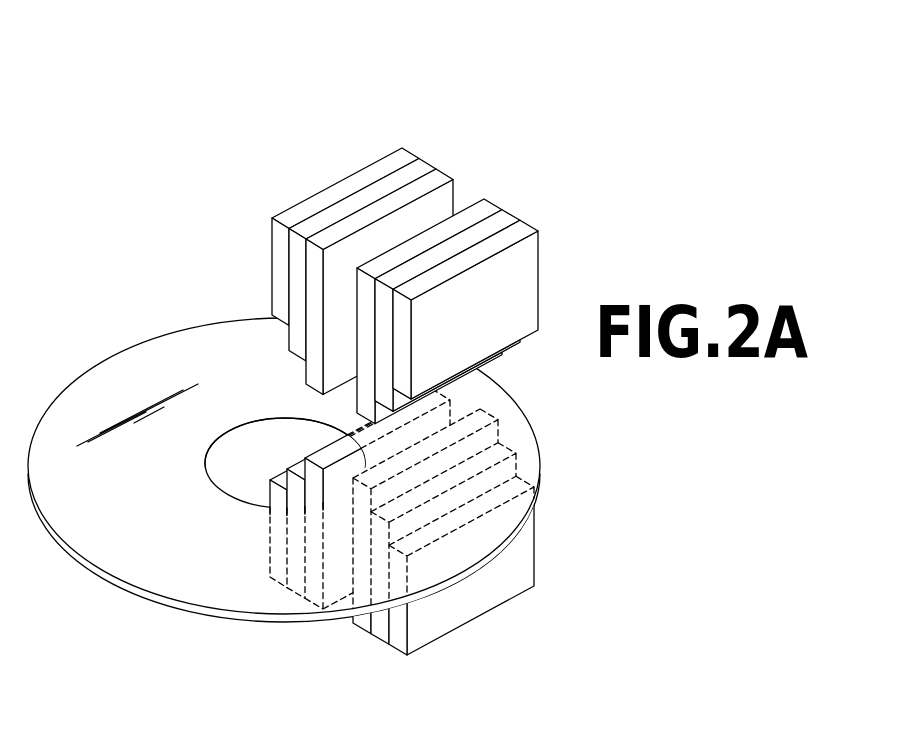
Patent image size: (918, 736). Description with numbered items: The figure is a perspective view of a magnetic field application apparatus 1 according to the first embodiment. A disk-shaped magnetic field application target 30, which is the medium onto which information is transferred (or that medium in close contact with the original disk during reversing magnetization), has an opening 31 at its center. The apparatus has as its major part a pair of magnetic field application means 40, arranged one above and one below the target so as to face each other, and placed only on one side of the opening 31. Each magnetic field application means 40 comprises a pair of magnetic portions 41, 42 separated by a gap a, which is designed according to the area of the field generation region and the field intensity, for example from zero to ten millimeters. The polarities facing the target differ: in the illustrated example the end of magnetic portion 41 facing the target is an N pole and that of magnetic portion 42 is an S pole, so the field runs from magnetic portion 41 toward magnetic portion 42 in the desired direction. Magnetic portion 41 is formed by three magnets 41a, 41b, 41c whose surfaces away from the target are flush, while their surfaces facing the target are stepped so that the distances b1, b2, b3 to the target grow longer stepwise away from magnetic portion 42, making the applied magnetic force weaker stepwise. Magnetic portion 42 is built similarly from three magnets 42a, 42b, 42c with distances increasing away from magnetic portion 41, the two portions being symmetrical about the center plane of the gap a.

The magnetic field application apparatus 1 is at (317, 373).
The magnetic field application target 30 is at (317, 478).
The opening 31 is at (247, 502).
The magnetic field application means 40 is at (381, 373).
The magnetic portion 41 is at (324, 343).
The magnet 41a is at (384, 203).
The magnet 41b is at (367, 193).
The magnet 41c is at (343, 187).
The magnetic portion 42 is at (457, 402).
The magnet 42a is at (447, 230).
The magnet 42b is at (465, 240).
The magnet 42c is at (475, 403).
The gap a is at (455, 181).
The distance b1 is at (330, 406).
The distance b2 is at (297, 359).
The distance b3 is at (279, 323).